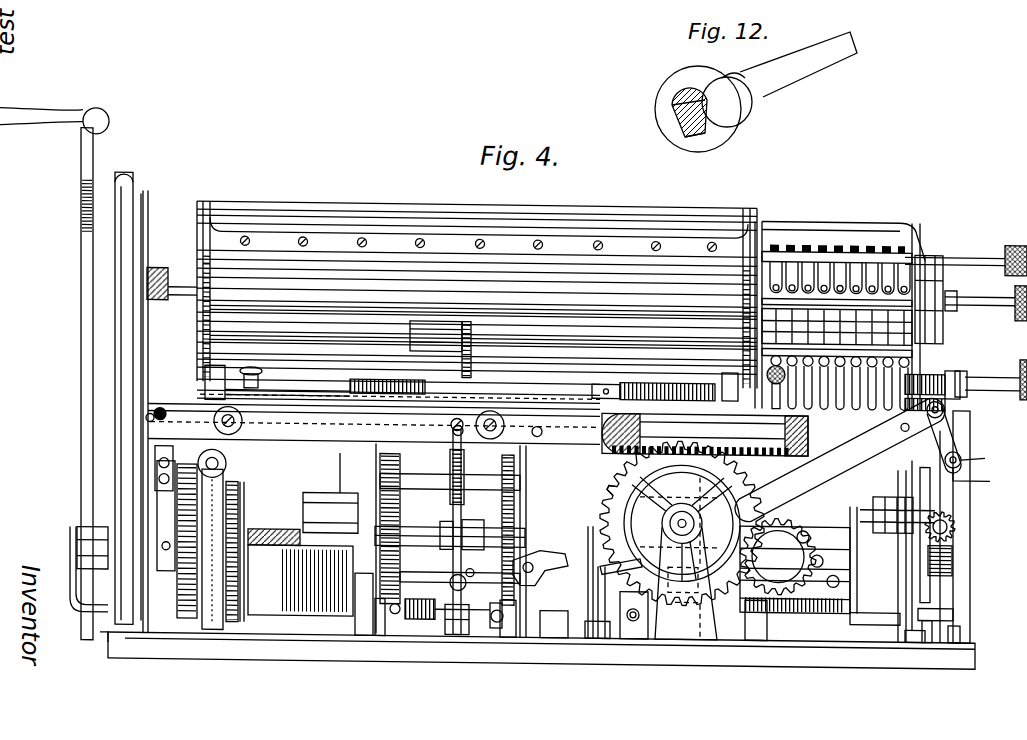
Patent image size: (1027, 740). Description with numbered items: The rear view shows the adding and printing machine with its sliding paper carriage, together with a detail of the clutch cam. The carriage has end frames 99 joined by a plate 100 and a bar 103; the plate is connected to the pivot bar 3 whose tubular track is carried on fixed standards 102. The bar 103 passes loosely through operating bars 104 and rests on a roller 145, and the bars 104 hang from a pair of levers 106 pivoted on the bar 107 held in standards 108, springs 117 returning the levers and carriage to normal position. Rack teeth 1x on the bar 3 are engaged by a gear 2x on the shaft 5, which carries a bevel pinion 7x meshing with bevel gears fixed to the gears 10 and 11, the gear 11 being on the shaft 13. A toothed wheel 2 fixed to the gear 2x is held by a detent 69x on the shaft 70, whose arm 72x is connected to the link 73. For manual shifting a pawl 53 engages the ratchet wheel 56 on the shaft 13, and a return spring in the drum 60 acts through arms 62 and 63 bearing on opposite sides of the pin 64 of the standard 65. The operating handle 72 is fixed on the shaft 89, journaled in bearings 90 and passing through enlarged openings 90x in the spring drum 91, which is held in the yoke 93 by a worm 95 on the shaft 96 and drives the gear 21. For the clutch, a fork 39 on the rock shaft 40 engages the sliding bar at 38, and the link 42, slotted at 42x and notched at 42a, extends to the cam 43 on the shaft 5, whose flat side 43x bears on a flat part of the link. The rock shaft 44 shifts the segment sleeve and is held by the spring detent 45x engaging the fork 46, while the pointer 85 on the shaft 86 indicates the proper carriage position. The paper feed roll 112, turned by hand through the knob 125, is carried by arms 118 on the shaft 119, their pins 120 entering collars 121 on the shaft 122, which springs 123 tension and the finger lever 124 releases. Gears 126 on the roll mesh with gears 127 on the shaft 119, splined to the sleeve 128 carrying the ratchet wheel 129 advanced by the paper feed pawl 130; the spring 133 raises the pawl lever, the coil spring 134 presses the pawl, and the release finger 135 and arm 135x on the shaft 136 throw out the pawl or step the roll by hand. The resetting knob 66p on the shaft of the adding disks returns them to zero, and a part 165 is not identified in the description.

In FIG. 4, the rack teeth 1x is at (627, 390).
In FIG. 4, the toothed wheel 2 is at (613, 481).
In FIG. 4, the gear 2x is at (628, 473).
In FIG. 4, the bar 3 is at (653, 390).
In FIG. 12, the shaft 5 is at (687, 100).
In FIG. 4, the shaft 5 is at (682, 522).
In FIG. 4, the bevel pinion 7x is at (683, 496).
In FIG. 4, the gear 10 is at (652, 481).
In FIG. 4, the gear 11 is at (717, 499).
In FIG. 4, the shaft 13 is at (792, 509).
In FIG. 4, the gear 21 is at (187, 613).
In FIG. 4, the engagement point 38 is at (967, 364).
In FIG. 4, the fork 39 is at (967, 392).
In FIG. 4, the rock shaft 40 is at (961, 448).
In FIG. 12, the link 42 is at (820, 62).
In FIG. 4, the link 42 is at (927, 399).
In FIG. 4, the slot 42x is at (923, 407).
In FIG. 4, the notch 42a is at (950, 352).
In FIG. 12, the cam 43 is at (700, 132).
In FIG. 12, the flat side 43x is at (672, 110).
In FIG. 4, the rock shaft 44 is at (650, 656).
In FIG. 4, the spring detent 45x is at (640, 590).
In FIG. 4, the fork 46 is at (635, 613).
In FIG. 4, the pawl 53 is at (933, 479).
In FIG. 4, the ratchet wheel 56 is at (947, 507).
In FIG. 4, the drum 60 is at (920, 496).
In FIG. 4, the arm 62 is at (885, 525).
In FIG. 4, the arm 63 is at (953, 524).
In FIG. 4, the pin 64 is at (877, 503).
In FIG. 4, the pin drum 65 is at (850, 534).
In FIG. 4, the knob 66p is at (1017, 297).
In FIG. 4, the detent 69x is at (713, 632).
In FIG. 4, the shaft 70 is at (897, 623).
In FIG. 4, the operating handle 72 is at (55, 117).
In FIG. 4, the arm 72x is at (927, 616).
In FIG. 4, the link 73 is at (920, 621).
In FIG. 4, the pointer 85 is at (462, 582).
In FIG. 4, the shaft 86 is at (540, 570).
In FIG. 4, the shaft 89 is at (110, 548).
In FIG. 4, the bearings 90 is at (247, 625).
In FIG. 4, the enlarged openings 90x is at (168, 572).
In FIG. 4, the drum 91 is at (233, 626).
In FIG. 4, the yoke 93 is at (197, 630).
In FIG. 4, the worm 95 is at (227, 460).
In FIG. 4, the shaft 96 is at (247, 481).
In FIG. 4, the end frames 99 is at (765, 213).
In FIG. 4, the plate 100 is at (552, 397).
In FIG. 4, the standards 102 is at (967, 579).
In FIG. 4, the bar 103 is at (300, 441).
In FIG. 4, the operating bars 104 is at (527, 462).
In FIG. 4, the levers 106 is at (523, 608).
In FIG. 4, the bar 107 is at (495, 605).
In FIG. 4, the standards 108 is at (572, 636).
In FIG. 4, the paper feed roll 112 is at (477, 287).
In FIG. 4, the springs 117 is at (510, 501).
In FIG. 4, the arms 118 is at (740, 312).
In FIG. 4, the shaft 119 is at (296, 388).
In FIG. 4, the pins 120 is at (200, 362).
In FIG. 4, the collars 121 is at (217, 381).
In FIG. 4, the shaft 122 is at (323, 388).
In FIG. 4, the springs 123 is at (378, 380).
In FIG. 4, the finger lever 124 is at (743, 364).
In FIG. 4, the knob 125 is at (165, 260).
In FIG. 4, the gear wheels 126 is at (213, 285).
In FIG. 4, the gears 127 is at (238, 308).
In FIG. 4, the sleeve 128 is at (433, 332).
In FIG. 4, the ratchet wheel 129 is at (480, 302).
In FIG. 4, the paper feed pawl 130 is at (450, 544).
In FIG. 4, the spring 133 is at (430, 613).
In FIG. 4, the coil spring 134 is at (450, 484).
In FIG. 4, the release finger 135 is at (492, 503).
In FIG. 4, the arm 135x is at (468, 609).
In FIG. 4, the shaft 136 is at (497, 528).
In FIG. 4, the roller 145 is at (450, 457).
In FIG. 4, the keyboard frame 165 is at (810, 561).